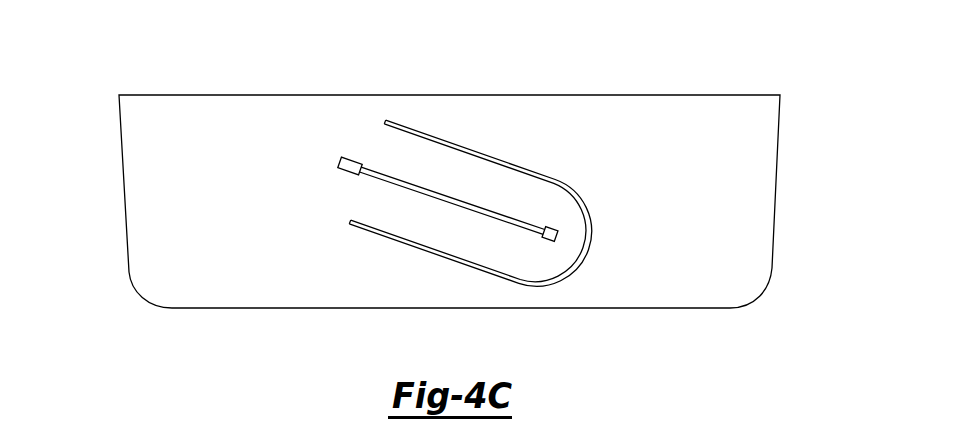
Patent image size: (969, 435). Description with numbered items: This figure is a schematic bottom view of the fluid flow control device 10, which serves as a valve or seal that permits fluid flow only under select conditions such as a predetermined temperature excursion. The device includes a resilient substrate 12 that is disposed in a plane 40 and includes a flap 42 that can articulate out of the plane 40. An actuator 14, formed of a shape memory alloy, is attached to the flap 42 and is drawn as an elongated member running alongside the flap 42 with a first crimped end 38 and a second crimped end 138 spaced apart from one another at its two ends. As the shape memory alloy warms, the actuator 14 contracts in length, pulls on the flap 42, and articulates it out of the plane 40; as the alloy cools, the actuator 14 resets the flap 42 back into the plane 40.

The fluid flow control device 10 is at (104, 68).
The resilient substrate 12 is at (762, 168).
The actuator 14 is at (440, 194).
The first crimped end 38 is at (553, 228).
The plane 40 is at (699, 247).
The flap 42 is at (513, 178).
The second crimped end 138 is at (352, 158).